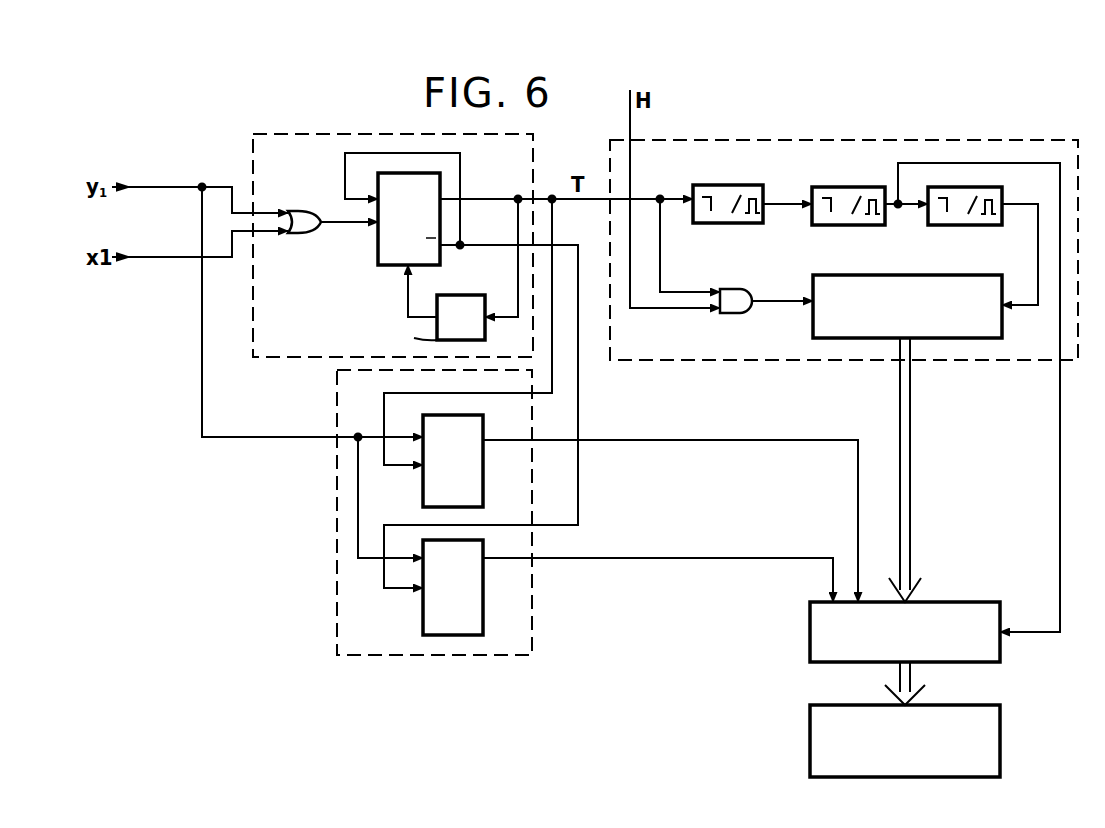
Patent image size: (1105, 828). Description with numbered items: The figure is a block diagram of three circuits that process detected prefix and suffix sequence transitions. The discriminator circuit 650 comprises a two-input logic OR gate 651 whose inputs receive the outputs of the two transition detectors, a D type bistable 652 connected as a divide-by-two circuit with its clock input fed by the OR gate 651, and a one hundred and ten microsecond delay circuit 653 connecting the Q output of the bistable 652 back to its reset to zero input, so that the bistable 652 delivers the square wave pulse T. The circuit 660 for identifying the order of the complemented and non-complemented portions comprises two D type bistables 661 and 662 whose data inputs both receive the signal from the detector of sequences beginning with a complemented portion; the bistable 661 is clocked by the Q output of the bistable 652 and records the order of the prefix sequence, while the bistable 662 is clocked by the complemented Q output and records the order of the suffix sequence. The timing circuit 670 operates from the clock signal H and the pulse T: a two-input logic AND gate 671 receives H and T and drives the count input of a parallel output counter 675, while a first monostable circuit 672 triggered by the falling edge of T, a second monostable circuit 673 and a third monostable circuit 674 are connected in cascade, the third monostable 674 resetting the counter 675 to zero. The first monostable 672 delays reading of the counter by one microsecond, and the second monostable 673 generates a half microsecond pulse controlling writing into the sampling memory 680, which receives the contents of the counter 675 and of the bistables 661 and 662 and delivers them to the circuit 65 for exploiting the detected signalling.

The discriminator circuit 650 is at (310, 132).
The two-input logic OR gate 651 is at (311, 211).
The D type bistable 652 is at (378, 250).
The delay circuit 653 is at (460, 295).
The order identifying circuit 660 is at (337, 521).
The D type bistable 661 is at (423, 493).
The D type bistable 662 is at (423, 623).
The timing circuit 670 is at (852, 138).
The two-input logic AND gate 671 is at (736, 290).
The first monostable circuit 672 is at (734, 185).
The second monostable circuit 673 is at (855, 187).
The third monostable circuit 674 is at (975, 225).
The parallel output counter 675 is at (861, 275).
The sampling memory 680 is at (810, 635).
The circuit for exploiting signalling 65 is at (810, 740).